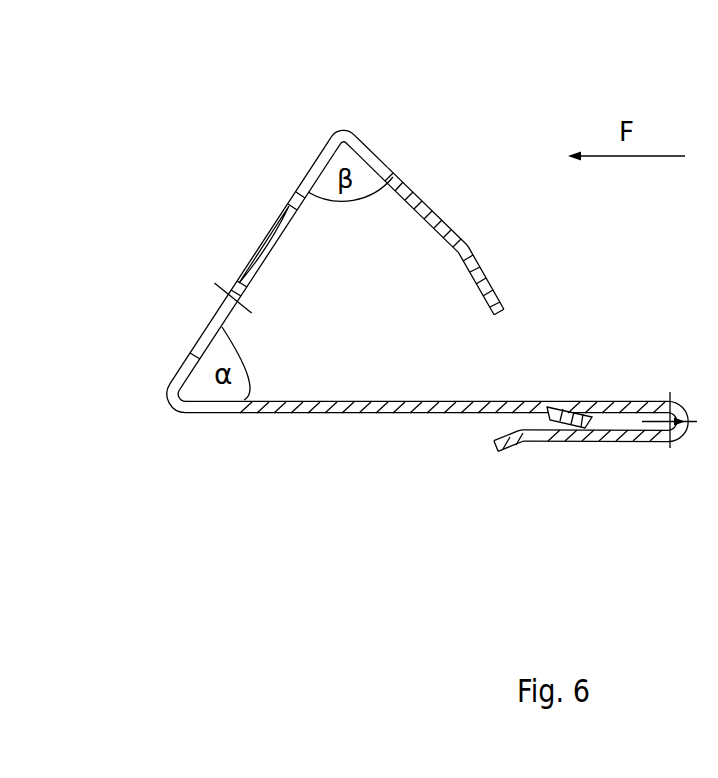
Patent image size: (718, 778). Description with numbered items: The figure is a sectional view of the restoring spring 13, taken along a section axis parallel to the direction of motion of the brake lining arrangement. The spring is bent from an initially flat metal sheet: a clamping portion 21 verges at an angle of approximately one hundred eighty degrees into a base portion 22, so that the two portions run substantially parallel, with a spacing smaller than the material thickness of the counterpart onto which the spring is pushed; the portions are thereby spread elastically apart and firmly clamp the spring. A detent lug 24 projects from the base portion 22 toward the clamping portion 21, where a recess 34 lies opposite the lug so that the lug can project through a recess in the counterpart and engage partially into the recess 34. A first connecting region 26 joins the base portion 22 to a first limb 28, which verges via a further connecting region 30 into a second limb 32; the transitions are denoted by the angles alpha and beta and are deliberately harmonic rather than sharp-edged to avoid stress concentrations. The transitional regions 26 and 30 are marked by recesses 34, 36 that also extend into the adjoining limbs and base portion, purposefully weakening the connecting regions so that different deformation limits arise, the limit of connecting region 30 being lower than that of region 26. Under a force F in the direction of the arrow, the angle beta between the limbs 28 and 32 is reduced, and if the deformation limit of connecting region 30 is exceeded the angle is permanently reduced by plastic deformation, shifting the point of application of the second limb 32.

The restoring spring 13 is at (511, 120).
The clamping portion 21 is at (650, 442).
The base portion 22 is at (403, 416).
The detent lug 24 is at (560, 424).
The first connecting region 26 is at (176, 399).
The first limb 28 is at (259, 247).
The connecting region 30 is at (345, 125).
The second limb 32 is at (468, 246).
The recess 34 is at (184, 376).
The recess 36 is at (384, 158).